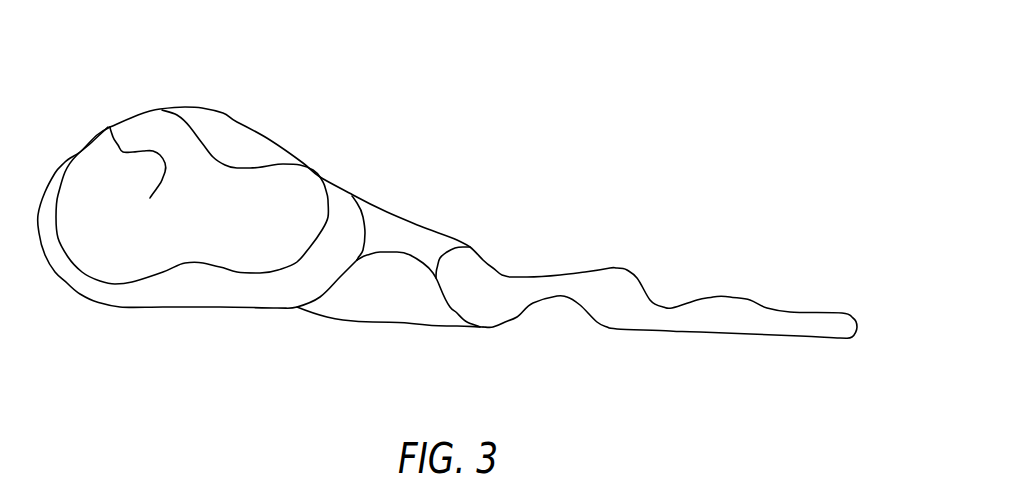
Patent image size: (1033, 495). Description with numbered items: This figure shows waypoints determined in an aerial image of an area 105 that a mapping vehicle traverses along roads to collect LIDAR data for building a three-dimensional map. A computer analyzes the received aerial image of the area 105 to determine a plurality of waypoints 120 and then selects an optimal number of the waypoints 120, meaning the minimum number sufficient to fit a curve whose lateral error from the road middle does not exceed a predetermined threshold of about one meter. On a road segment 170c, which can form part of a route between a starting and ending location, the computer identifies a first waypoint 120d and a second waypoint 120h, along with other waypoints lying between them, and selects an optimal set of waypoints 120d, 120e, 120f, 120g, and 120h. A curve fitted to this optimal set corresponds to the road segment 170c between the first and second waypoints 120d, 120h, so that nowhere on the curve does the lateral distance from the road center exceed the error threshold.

The area 105 is at (710, 140).
The waypoints 120 is at (483, 260).
The first waypoint 120d is at (357, 260).
The waypoint 120e is at (380, 252).
The waypoint 120f is at (406, 254).
The waypoint 120g is at (423, 263).
The second waypoint 120h is at (437, 280).
The road segment 170c is at (379, 282).